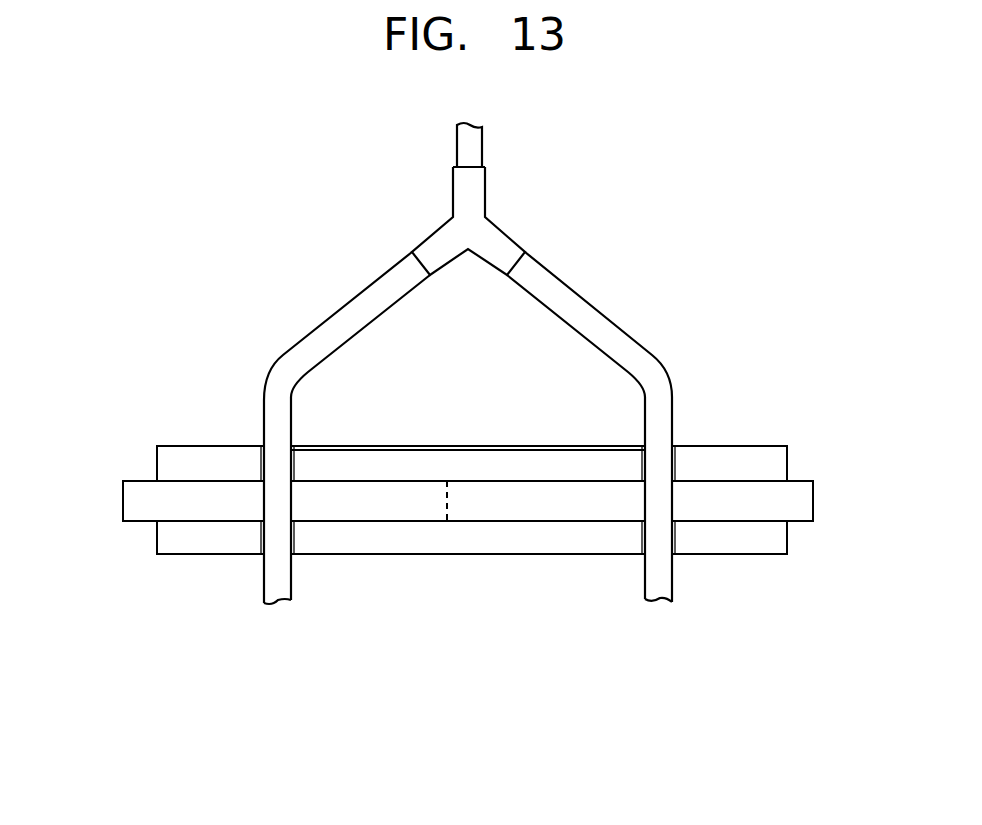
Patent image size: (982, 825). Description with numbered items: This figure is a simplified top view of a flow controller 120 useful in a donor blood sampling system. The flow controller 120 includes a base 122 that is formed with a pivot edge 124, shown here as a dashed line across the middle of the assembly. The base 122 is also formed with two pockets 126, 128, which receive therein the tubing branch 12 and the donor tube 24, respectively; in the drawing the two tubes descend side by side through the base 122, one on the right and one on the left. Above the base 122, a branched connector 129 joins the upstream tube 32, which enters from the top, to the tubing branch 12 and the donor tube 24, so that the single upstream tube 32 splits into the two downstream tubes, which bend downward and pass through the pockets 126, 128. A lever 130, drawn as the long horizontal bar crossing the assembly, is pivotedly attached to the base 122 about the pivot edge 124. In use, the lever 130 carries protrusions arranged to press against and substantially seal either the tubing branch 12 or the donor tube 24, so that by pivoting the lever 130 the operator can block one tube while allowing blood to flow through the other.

The tubing branch 12 is at (648, 573).
The donor tube 24 is at (268, 585).
The upstream tube 32 is at (472, 147).
The flow controller 120 is at (705, 601).
The base 122 is at (195, 455).
The pivot edge 124 is at (447, 498).
The pocket 126 is at (673, 533).
The pocket 128 is at (293, 528).
The branched connector 129 is at (437, 237).
The lever 130 is at (187, 507).